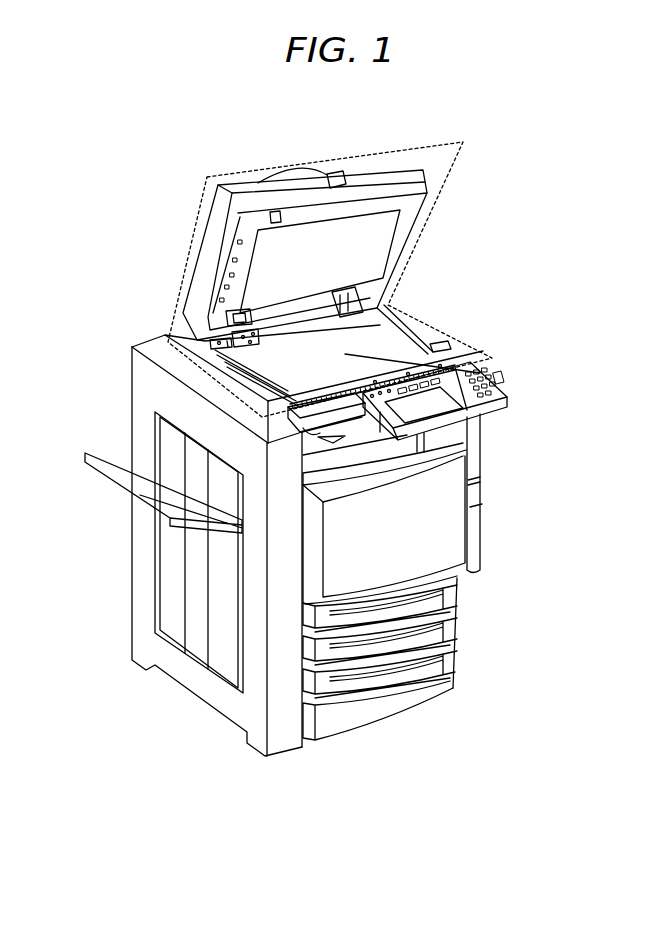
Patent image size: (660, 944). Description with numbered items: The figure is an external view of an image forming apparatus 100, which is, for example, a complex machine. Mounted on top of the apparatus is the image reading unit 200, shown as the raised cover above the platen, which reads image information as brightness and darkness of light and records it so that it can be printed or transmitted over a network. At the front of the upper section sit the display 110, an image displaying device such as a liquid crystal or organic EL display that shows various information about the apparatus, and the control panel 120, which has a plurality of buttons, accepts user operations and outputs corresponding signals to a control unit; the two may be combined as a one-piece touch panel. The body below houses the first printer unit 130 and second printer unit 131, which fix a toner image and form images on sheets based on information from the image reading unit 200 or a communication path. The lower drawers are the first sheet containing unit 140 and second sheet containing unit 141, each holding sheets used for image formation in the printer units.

The image forming apparatus 100 is at (317, 140).
The image reading unit 200 is at (432, 140).
The display 110 is at (458, 363).
The control panel 120 is at (496, 387).
The first printer unit 130 is at (452, 542).
The second printer unit 131 is at (392, 509).
The first sheet containing unit 140 is at (466, 578).
The second sheet containing unit 141 is at (380, 659).